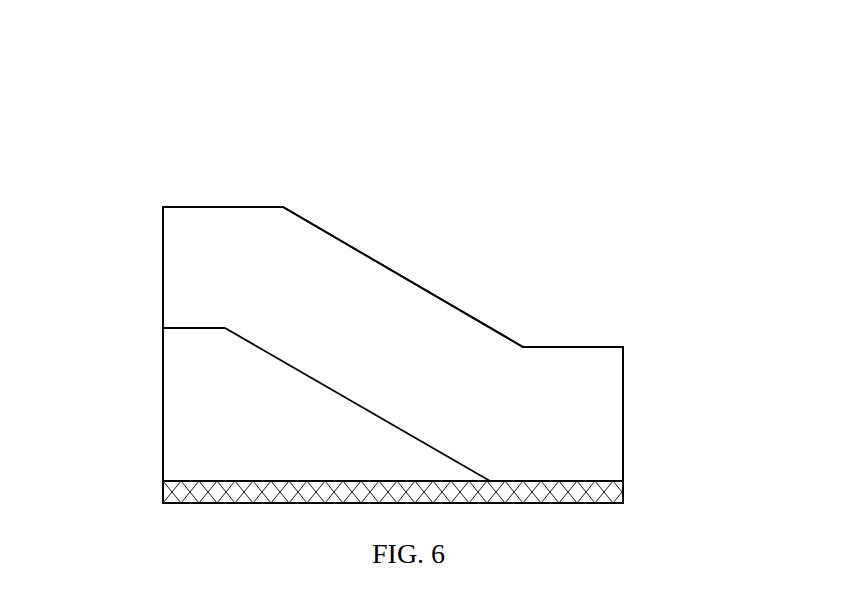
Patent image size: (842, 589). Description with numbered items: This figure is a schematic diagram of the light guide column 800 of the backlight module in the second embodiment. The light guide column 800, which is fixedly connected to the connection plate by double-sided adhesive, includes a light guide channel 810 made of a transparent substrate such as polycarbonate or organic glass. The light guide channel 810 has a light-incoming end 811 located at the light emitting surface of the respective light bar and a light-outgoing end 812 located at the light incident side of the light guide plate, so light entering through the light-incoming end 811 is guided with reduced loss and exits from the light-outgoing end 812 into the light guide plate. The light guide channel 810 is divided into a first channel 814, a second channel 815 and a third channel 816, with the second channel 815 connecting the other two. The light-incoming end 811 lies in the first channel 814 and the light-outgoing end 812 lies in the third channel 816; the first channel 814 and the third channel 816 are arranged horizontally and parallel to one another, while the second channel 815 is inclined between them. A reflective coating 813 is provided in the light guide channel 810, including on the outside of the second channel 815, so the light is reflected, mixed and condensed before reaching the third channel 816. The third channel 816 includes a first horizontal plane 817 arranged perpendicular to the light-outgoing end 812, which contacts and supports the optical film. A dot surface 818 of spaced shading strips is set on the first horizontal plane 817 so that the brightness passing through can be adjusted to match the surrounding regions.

The light guide column 800 is at (183, 422).
The light guide channel 810 is at (223, 50).
The light-incoming end 811 is at (623, 422).
The light-outgoing end 812 is at (163, 257).
The reflective coating 813 is at (350, 233).
The first channel 814 is at (565, 400).
The second channel 815 is at (417, 370).
The third channel 816 is at (200, 277).
The first horizontal plane 817 is at (253, 207).
The dot surface 818 is at (253, 207).